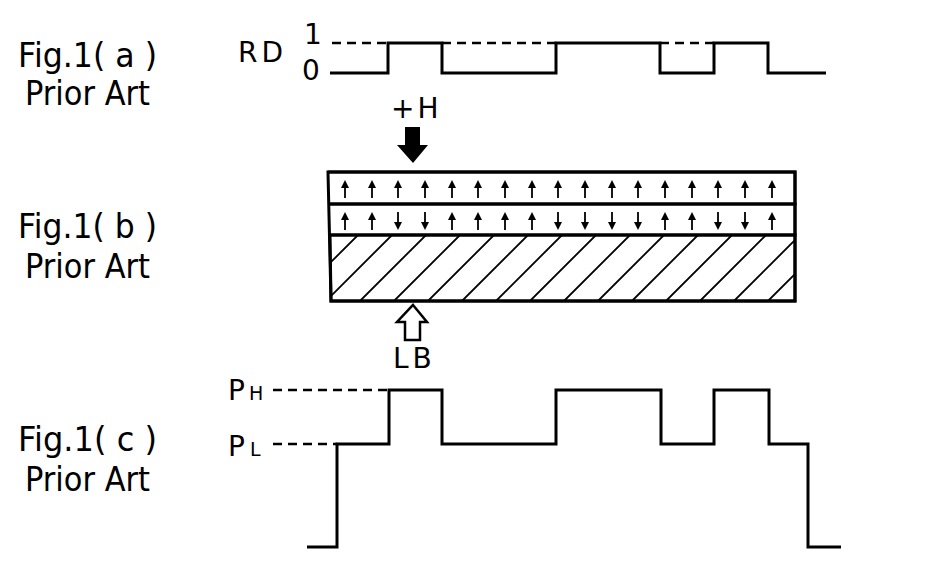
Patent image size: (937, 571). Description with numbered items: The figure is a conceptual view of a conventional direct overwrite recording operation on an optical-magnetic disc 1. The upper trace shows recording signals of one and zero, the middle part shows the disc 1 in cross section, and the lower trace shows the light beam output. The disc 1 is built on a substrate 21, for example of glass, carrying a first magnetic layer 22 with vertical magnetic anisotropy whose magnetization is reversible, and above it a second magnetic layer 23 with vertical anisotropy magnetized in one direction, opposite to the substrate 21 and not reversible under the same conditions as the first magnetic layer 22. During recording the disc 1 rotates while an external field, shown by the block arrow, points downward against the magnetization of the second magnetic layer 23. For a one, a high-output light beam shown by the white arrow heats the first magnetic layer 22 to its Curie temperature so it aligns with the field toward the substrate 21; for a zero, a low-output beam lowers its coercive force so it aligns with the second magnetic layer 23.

The optical-magnetic disc 1 is at (816, 251).
The substrate 21 is at (787, 270).
The first magnetic layer 22 is at (793, 220).
The second magnetic layer 23 is at (793, 192).